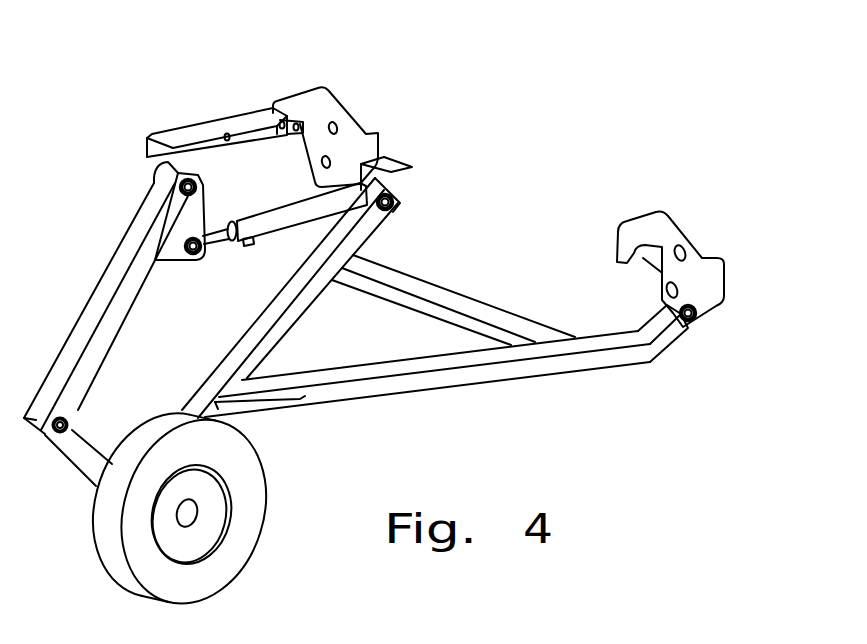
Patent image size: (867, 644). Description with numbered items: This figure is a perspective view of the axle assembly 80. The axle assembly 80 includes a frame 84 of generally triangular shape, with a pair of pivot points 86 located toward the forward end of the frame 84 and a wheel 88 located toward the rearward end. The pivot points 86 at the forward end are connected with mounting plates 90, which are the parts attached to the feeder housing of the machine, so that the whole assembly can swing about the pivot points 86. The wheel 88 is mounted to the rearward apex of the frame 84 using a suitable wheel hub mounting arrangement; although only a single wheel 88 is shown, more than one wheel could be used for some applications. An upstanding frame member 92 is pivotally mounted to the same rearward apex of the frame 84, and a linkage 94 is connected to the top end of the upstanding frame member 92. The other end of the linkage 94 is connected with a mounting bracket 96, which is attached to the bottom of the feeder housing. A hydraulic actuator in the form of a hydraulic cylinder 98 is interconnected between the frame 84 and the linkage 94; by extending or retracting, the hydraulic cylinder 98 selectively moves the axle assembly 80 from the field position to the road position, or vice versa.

The axle assembly 80 is at (546, 170).
The frame 84 is at (445, 383).
The pivot points 86 is at (400, 202).
The wheel 88 is at (232, 567).
The mounting plates 90 is at (332, 106).
The upstanding frame member 92 is at (82, 475).
The linkage 94 is at (90, 300).
The mounting bracket 96 is at (213, 133).
The hydraulic cylinder 98 is at (274, 232).